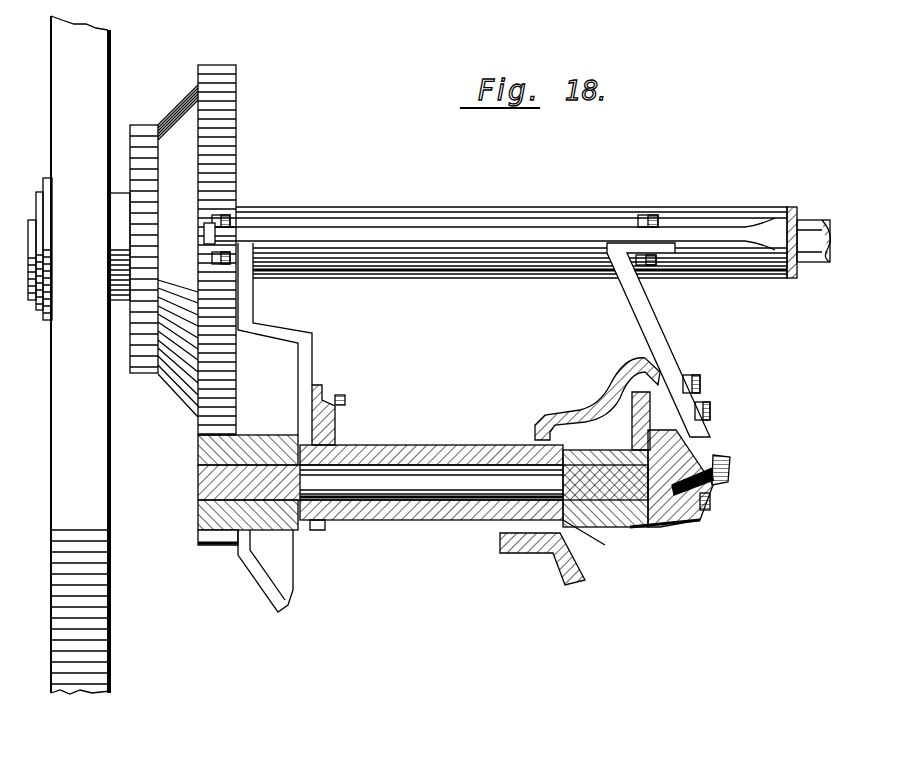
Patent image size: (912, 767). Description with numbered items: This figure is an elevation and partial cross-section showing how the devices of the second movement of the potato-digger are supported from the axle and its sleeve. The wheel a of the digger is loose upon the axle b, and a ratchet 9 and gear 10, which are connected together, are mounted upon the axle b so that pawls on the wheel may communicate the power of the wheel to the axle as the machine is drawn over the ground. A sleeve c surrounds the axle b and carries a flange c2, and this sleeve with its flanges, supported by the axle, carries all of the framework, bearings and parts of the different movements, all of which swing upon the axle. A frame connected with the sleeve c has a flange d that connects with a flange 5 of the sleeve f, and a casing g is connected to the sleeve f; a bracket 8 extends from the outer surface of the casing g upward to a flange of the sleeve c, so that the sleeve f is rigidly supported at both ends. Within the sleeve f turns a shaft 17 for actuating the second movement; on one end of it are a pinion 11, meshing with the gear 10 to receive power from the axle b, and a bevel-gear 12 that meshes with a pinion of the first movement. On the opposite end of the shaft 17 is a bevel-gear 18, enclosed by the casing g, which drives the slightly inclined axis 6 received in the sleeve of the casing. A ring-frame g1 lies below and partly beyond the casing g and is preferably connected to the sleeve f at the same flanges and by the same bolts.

The wheel a is at (79, 355).
The ratchet 9 is at (140, 125).
The gear 10 is at (221, 75).
The sleeve c is at (752, 207).
The flange c2 is at (453, 230).
The axle b is at (820, 220).
The bracket 8 is at (666, 335).
The flange d is at (290, 337).
The flange 5 is at (338, 418).
The sleeve f is at (452, 445).
The shaft 17 is at (440, 483).
The pinion 11 is at (218, 540).
The bevel-gear 12 is at (270, 598).
The bevel-gear 18 is at (633, 420).
The casing g is at (580, 408).
The axis 6 is at (690, 450).
The ring-frame g1 is at (563, 557).